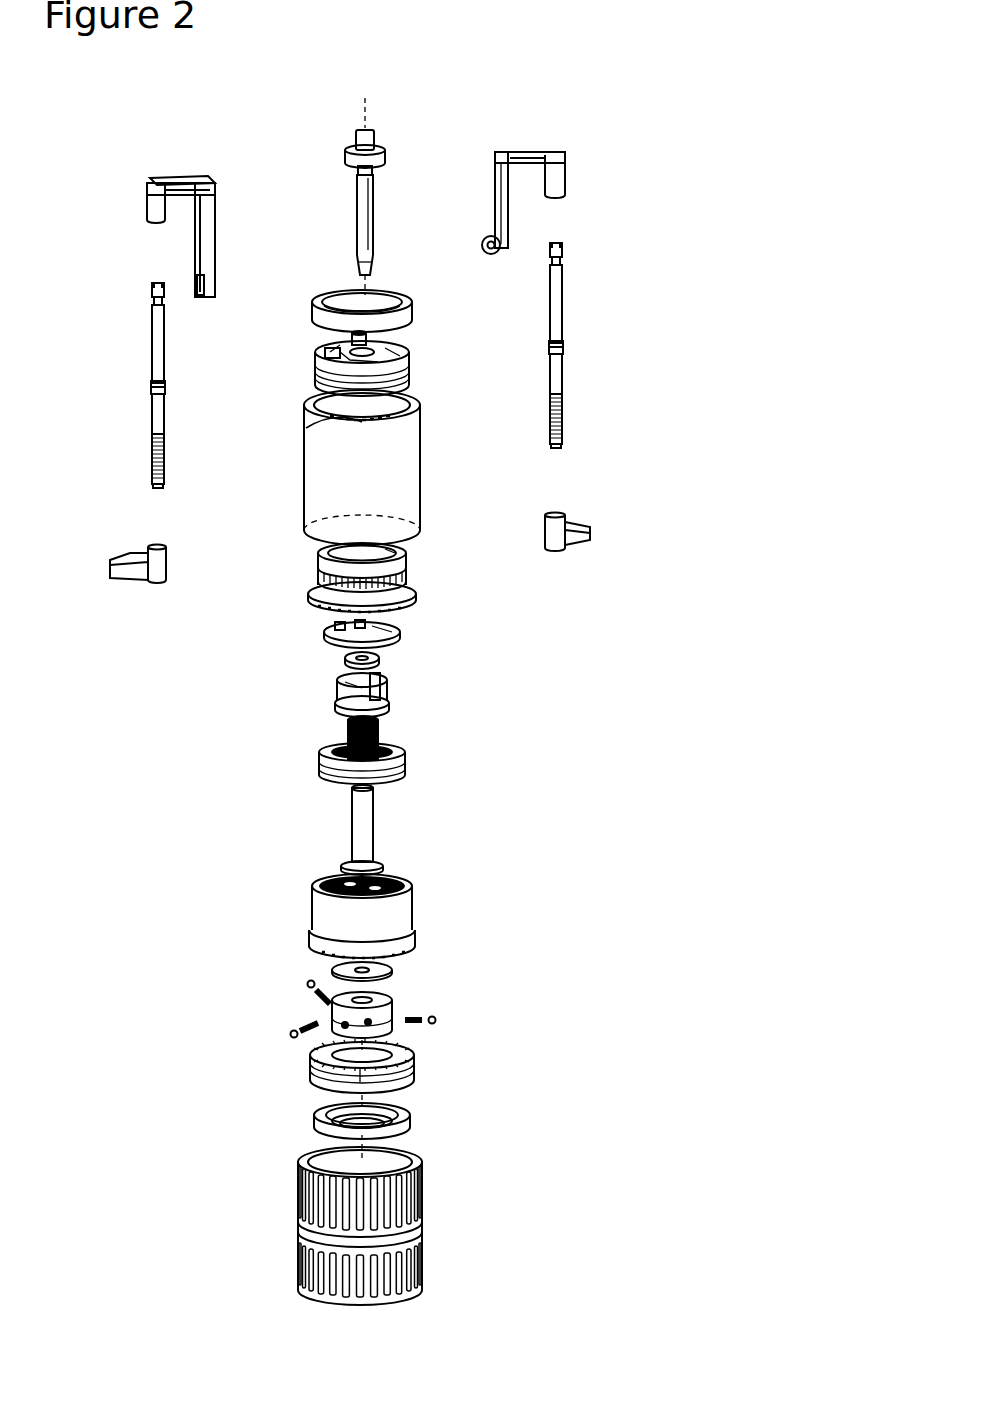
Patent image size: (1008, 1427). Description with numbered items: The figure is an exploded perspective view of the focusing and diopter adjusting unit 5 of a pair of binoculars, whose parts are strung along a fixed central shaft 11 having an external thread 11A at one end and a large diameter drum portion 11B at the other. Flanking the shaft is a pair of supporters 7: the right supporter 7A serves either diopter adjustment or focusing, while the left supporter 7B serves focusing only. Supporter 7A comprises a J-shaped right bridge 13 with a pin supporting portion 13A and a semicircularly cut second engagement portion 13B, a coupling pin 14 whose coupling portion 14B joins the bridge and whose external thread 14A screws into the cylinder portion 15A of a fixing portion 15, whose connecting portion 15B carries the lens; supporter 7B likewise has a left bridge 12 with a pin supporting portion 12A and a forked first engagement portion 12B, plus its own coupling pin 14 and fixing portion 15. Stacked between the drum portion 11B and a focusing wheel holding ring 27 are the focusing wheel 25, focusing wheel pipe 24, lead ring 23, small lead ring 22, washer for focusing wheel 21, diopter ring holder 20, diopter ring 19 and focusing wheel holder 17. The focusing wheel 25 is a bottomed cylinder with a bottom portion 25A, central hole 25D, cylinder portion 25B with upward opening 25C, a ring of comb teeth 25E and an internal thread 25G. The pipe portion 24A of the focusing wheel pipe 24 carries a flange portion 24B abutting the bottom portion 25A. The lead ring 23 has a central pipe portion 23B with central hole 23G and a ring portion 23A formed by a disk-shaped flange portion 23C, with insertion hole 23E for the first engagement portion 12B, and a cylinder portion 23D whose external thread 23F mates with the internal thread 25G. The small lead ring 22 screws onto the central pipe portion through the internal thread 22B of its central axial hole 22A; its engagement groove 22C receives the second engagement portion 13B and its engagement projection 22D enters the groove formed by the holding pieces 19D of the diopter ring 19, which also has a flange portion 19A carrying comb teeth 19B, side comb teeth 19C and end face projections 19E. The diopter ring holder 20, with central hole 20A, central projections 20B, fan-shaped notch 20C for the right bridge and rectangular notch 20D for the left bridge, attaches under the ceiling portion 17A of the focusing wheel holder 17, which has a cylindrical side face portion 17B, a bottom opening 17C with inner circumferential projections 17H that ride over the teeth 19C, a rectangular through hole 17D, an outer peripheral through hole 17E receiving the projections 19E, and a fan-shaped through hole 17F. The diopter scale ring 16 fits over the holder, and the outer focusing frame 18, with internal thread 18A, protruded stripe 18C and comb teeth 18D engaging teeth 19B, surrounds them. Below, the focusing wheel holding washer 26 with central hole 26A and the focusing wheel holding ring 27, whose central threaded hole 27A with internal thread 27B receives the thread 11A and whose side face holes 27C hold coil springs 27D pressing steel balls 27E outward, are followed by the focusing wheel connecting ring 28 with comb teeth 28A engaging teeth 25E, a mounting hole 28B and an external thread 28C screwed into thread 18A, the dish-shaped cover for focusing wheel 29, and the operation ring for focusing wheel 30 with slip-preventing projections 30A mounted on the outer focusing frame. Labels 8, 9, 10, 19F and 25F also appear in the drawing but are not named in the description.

The focusing and diopter adjusting unit 5 is at (632, 130).
The supporters 7 is at (665, 330).
The one supporter 7A is at (620, 300).
The other supporter 7B is at (128, 408).
The lens drive unit 8 is at (215, 770).
The rotation transmission unit 9 is at (228, 690).
The drive ring unit 10 is at (205, 1070).
The fixed central shaft 11 is at (355, 191).
The external thread 11A is at (362, 268).
The large diameter drum portion 11B is at (384, 146).
The left bridge 12 is at (176, 211).
The pin supporting portion 12A is at (148, 210).
The first engagement portion 12B is at (216, 290).
The right bridge 13 is at (529, 178).
The pin supporting portion 13A is at (560, 178).
The second engagement portion 13B is at (487, 243).
The coupling pin 14 is at (363, 362).
The external thread 14A is at (152, 475).
The coupling portion 14B is at (153, 290).
The fixing portion 15 is at (363, 556).
The cylinder portion 15A is at (158, 583).
The connecting portion 15B is at (120, 575).
The diopter scale ring 16 is at (410, 312).
The focusing wheel holder 17 is at (373, 359).
The ceiling portion 17A is at (330, 347).
The cylindrical side face portion 17B is at (318, 380).
The opening 17C is at (405, 388).
The rectangular through hole 17D is at (323, 358).
The outer peripheral through hole 17E is at (405, 362).
The fan-shaped through hole 17F is at (375, 340).
The inner circumferential projections 17H is at (408, 395).
The outer focusing frame 18 is at (363, 467).
The internal thread 18A is at (425, 528).
The protruded stripe 18C is at (325, 418).
The teeth of comb 18D is at (330, 428).
The diopter ring 19 is at (381, 571).
The flange portion 19A is at (315, 598).
The teeth of comb 19B is at (318, 588).
The teeth of comb 19C is at (408, 572).
The holding pieces 19D is at (412, 601).
The end face projections 19E is at (405, 556).
The ring notch 19F is at (396, 556).
The diopter ring holder 20 is at (408, 649).
The central hole 20A is at (340, 636).
The central projections 20B is at (392, 651).
The fan-shaped notch 20C is at (335, 645).
The rectangular notch 20D is at (396, 628).
The washer for focusing wheel 21 is at (338, 692).
The small lead ring 22 is at (392, 714).
The central axial hole 22A is at (340, 704).
The internal thread 22B is at (278, 743).
The engagement groove 22C is at (392, 700).
The engagement projection 22D is at (386, 685).
The lead ring 23 is at (424, 766).
The ring portion 23A is at (483, 755).
The central pipe portion 23B is at (378, 730).
The disk-shaped flange portion 23C is at (405, 757).
The cylinder portion 23D is at (405, 770).
The insertion hole 23E is at (319, 757).
The external thread 23F is at (453, 815).
The central hole 23G is at (542, 718).
The focusing wheel pipe 24 is at (290, 830).
The pipe portion 24A is at (355, 822).
The flange portion 24B is at (343, 865).
The focusing wheel 25 is at (404, 911).
The bottom portion 25A is at (318, 942).
The cylinder portion 25B is at (315, 918).
The opening 25C is at (320, 882).
The central hole 25D is at (372, 938).
The teeth of comb 25E is at (322, 953).
The stator rim 25F is at (415, 935).
The internal thread 25G is at (395, 878).
The focusing wheel holding washer 26 is at (445, 971).
The central hole 26A is at (393, 970).
The focusing wheel holding ring 27 is at (328, 1026).
The central threaded hole 27A is at (332, 1003).
The internal thread 27B is at (238, 1035).
The circumferential side face holes 27C is at (395, 1028).
The coil spring 27D is at (425, 1012).
The steel balls 27E is at (440, 1020).
The focusing wheel connecting ring 28 is at (403, 1073).
The teeth of comb 28A is at (415, 1058).
The mounting hole 28B is at (418, 1082).
The external thread 28C is at (312, 1068).
The cover for focusing wheel 29 is at (300, 1120).
The operation ring for focusing wheel 30 is at (376, 1226).
The slip-preventing projections 30A is at (410, 1265).